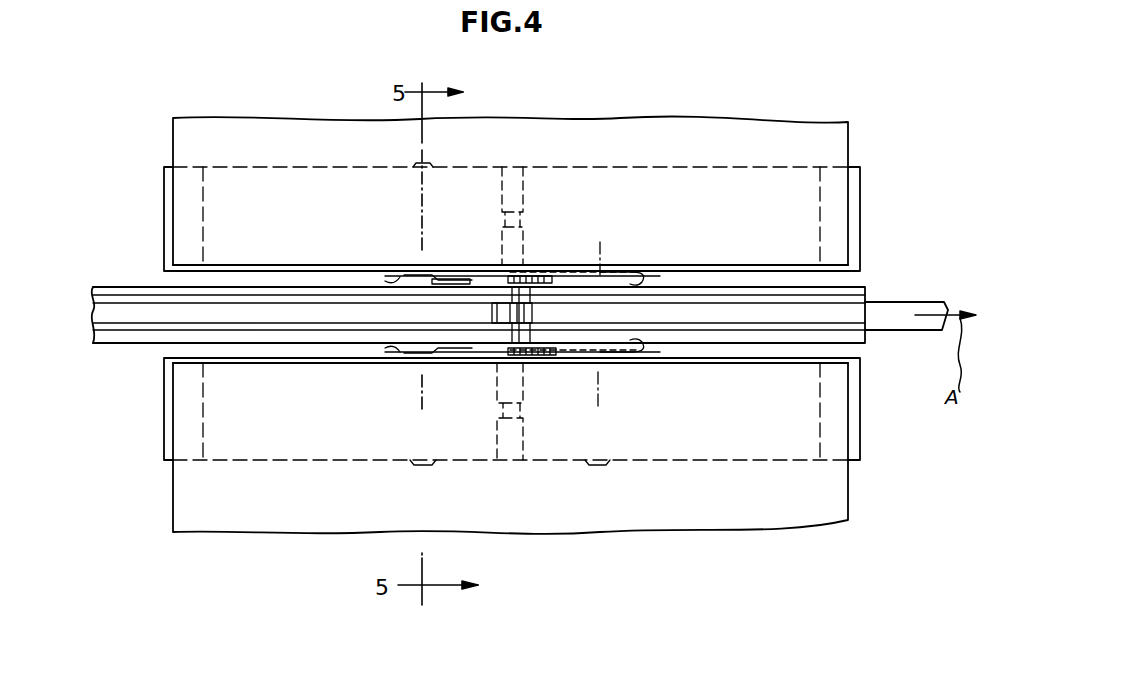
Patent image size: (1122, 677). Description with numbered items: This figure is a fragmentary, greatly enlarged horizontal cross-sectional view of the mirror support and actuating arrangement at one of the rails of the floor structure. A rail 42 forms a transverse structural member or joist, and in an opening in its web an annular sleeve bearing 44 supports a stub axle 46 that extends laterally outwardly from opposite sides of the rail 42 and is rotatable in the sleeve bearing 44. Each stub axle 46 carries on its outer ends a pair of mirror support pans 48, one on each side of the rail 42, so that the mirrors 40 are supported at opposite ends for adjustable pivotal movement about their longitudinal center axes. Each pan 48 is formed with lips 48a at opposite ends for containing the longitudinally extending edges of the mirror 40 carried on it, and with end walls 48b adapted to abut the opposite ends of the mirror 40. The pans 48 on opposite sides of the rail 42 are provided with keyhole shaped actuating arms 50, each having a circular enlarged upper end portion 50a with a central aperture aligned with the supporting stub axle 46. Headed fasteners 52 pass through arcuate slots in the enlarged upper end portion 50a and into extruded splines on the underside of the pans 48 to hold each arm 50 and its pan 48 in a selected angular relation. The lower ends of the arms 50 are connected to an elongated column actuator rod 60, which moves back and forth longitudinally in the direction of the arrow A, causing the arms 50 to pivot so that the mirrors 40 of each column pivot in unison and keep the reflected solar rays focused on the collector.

The mirror 40 is at (641, 118).
The rail 42 is at (865, 280).
The sleeve bearing 44 is at (533, 316).
The stub axle 46 is at (516, 242).
The mirror support pan 48 is at (728, 166).
The lip 48a is at (164, 205).
The end wall 48b is at (235, 264).
The actuating arm 50 is at (400, 276).
The enlarged upper end portion 50a is at (640, 268).
The headed fastener 52 is at (430, 283).
The column actuator rod 60 is at (908, 320).